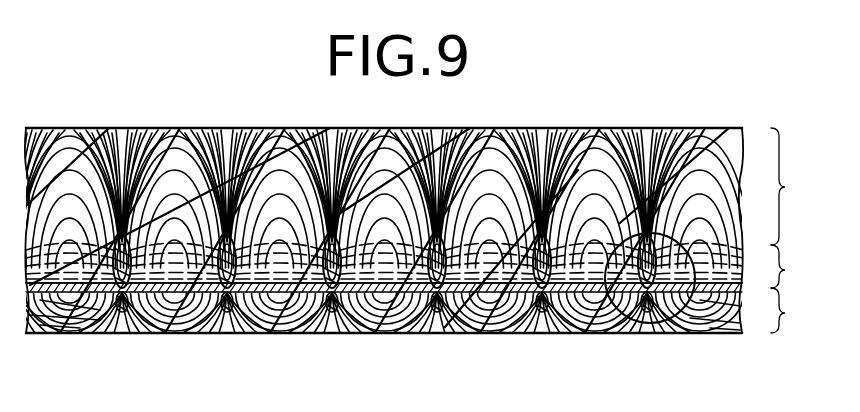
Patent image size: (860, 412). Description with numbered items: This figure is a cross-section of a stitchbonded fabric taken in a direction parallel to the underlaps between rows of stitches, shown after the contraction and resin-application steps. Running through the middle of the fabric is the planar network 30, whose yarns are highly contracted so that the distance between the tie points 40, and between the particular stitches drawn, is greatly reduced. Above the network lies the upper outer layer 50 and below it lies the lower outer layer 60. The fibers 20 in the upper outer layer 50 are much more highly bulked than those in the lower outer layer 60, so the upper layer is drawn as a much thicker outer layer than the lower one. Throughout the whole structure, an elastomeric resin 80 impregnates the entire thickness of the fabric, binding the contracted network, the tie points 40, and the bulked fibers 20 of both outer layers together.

The fibers 20 is at (579, 170).
The planar network 30 is at (427, 268).
The tie points 40 is at (642, 323).
The upper outer layer 50 is at (428, 230).
The lower outer layer 60 is at (429, 310).
The elastomeric resin 80 is at (125, 130).